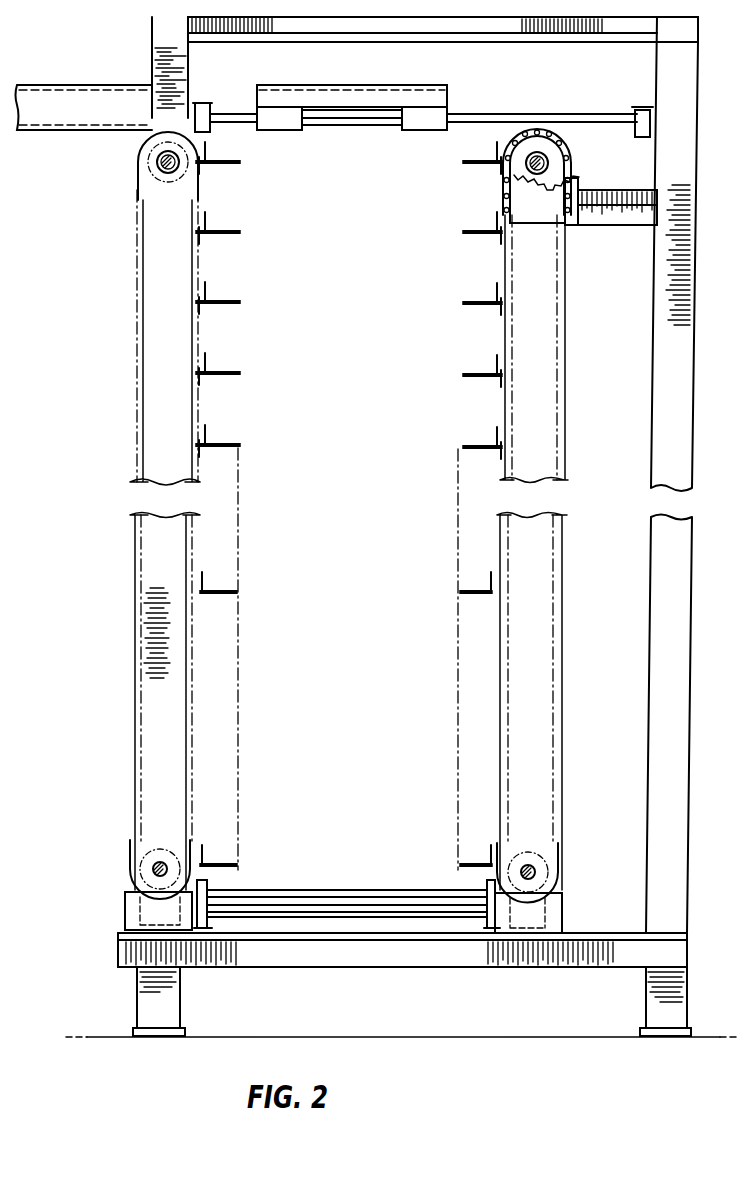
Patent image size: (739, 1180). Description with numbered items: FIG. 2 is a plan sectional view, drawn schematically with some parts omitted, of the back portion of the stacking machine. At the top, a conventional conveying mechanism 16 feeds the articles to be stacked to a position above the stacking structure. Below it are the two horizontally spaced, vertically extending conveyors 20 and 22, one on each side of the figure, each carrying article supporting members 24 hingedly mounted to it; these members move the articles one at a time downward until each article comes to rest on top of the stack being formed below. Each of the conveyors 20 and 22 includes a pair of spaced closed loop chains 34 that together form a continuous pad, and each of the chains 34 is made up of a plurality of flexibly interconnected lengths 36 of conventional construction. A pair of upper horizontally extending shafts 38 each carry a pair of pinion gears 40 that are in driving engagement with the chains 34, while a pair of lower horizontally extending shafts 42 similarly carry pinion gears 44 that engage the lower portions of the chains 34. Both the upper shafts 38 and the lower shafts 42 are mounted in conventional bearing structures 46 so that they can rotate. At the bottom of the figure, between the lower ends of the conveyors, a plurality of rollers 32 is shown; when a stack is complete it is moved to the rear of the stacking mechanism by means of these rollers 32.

The conveying mechanism 16 is at (88, 90).
The conveyor 20 is at (565, 360).
The conveyor 22 is at (137, 374).
The article supporting members 24 is at (235, 300).
The rollers 32 is at (376, 890).
The closed loop chains 34 is at (580, 156).
The flexibly interconnected lengths 36 is at (546, 130).
The upper horizontally extending shafts 38 is at (160, 162).
The pinion gears 40 is at (167, 188).
The lower horizontally extending shafts 42 is at (154, 866).
The pinion gears 44 is at (157, 842).
The bearing structures 46 is at (140, 885).